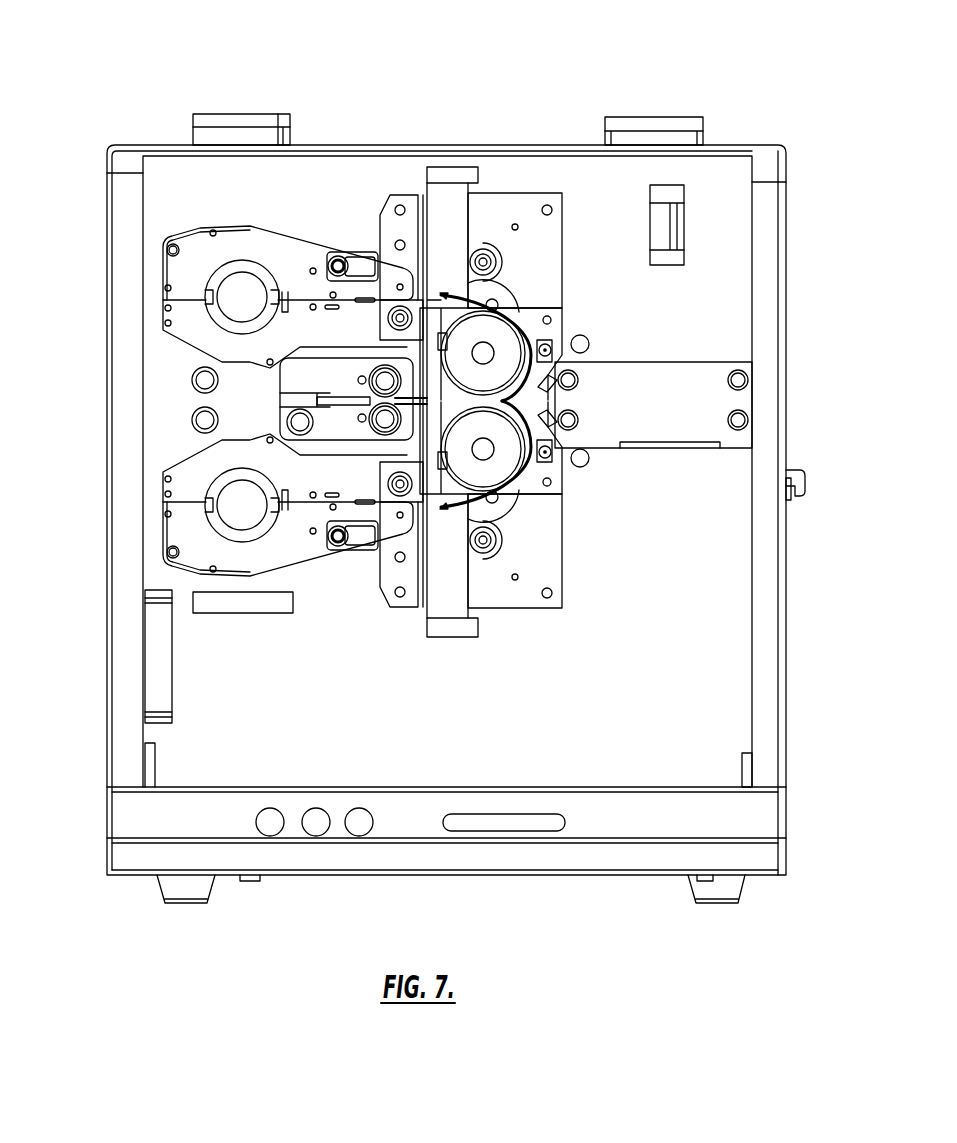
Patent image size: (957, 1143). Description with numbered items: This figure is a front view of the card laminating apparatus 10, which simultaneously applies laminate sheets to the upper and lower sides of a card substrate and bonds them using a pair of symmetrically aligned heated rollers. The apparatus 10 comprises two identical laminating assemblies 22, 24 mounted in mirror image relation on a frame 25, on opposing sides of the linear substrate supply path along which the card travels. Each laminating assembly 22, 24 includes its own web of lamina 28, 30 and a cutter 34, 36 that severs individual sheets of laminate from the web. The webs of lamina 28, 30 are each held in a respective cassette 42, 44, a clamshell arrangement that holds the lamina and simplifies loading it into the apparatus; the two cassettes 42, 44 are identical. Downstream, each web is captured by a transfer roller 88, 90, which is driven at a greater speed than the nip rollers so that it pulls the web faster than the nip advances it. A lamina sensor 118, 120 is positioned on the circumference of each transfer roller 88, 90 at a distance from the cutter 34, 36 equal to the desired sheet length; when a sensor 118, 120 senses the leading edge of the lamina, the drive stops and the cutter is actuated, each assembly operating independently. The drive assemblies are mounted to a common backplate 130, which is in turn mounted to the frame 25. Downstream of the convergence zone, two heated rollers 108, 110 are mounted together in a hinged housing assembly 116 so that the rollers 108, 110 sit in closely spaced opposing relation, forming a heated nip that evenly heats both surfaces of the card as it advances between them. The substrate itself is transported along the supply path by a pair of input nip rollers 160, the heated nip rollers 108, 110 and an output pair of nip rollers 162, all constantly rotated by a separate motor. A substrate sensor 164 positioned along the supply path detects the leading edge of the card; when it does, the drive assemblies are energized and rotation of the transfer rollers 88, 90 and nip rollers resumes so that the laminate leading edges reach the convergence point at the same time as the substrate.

The card laminating apparatus 10 is at (556, 122).
The laminating assembly 22 is at (540, 282).
The laminating assembly 24 is at (537, 555).
The frame 25 is at (343, 200).
The web of lamina 28 is at (225, 222).
The web of lamina 30 is at (182, 552).
The cutter 34 is at (450, 190).
The cutter 36 is at (446, 590).
The cassette 42 is at (258, 243).
The cassette 44 is at (172, 513).
The transfer roller 88 is at (500, 343).
The transfer roller 90 is at (500, 462).
The heated roller 108 is at (385, 378).
The heated roller 110 is at (385, 425).
The hinged housing assembly 116 is at (300, 378).
The lamina sensor 118 is at (545, 365).
The lamina sensor 120 is at (512, 470).
The common backplate 130 is at (500, 205).
The input nip rollers 160 is at (577, 402).
The output nip rollers 162 is at (197, 410).
The substrate sensor 164 is at (580, 418).